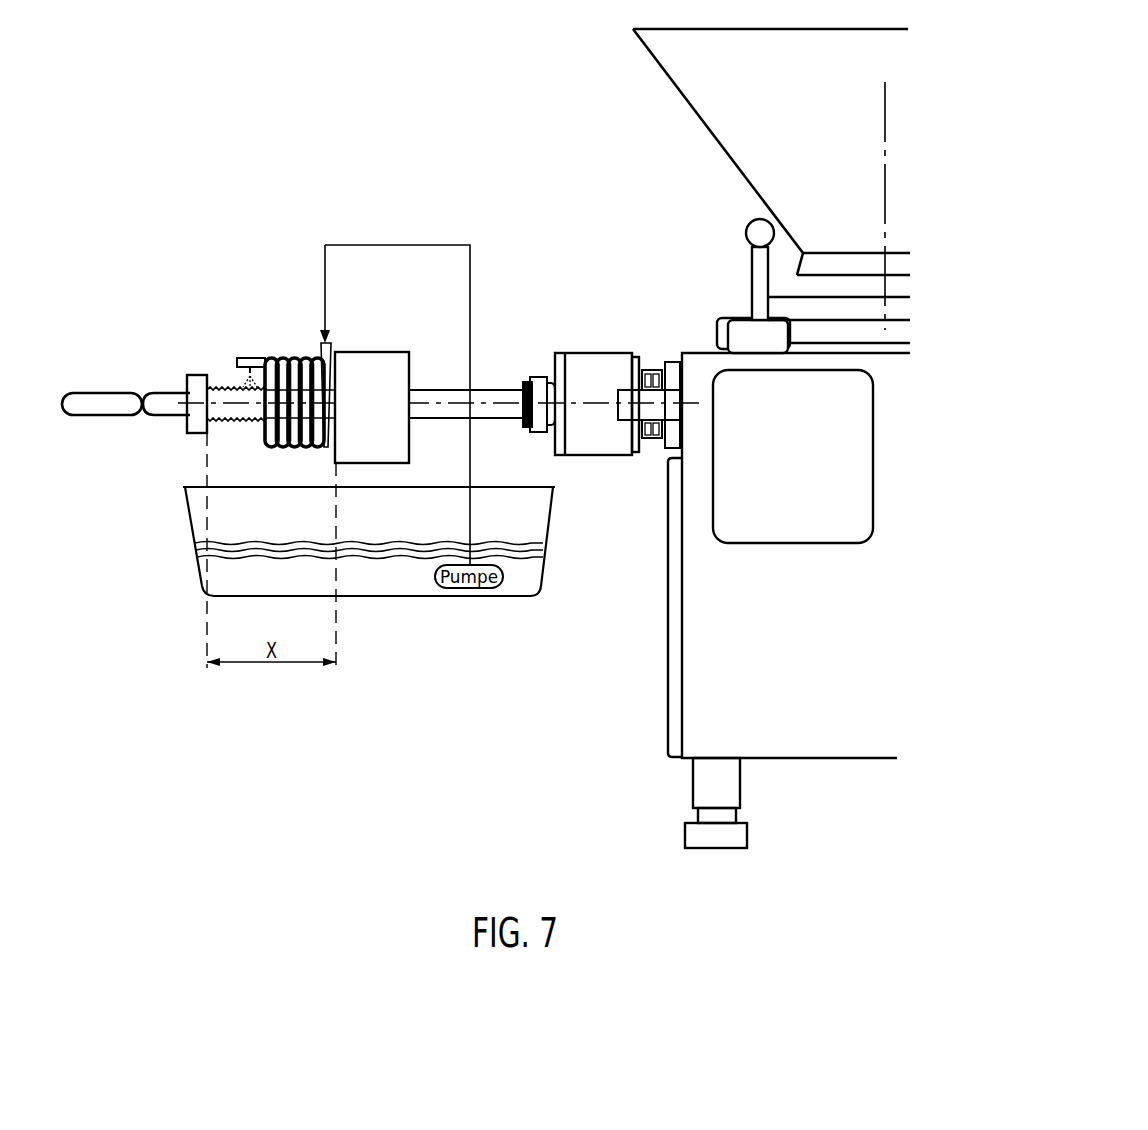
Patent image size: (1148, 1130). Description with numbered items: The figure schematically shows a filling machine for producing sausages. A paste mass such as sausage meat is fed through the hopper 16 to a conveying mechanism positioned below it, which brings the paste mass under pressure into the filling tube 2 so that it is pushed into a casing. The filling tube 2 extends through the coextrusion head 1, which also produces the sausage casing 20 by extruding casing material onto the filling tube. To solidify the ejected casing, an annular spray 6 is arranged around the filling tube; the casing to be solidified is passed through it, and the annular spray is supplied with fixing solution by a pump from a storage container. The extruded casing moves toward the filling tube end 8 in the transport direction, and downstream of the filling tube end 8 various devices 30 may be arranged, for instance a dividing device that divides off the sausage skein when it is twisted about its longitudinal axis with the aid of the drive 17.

The coextrusion head 1 is at (378, 357).
The filling tube 2 is at (445, 403).
The annular spray 6 is at (287, 347).
The filling tube end 8 is at (214, 419).
The hopper 16 is at (722, 130).
The drive 17 is at (610, 366).
The sausage casing 20 is at (220, 388).
The various devices 30 is at (197, 375).